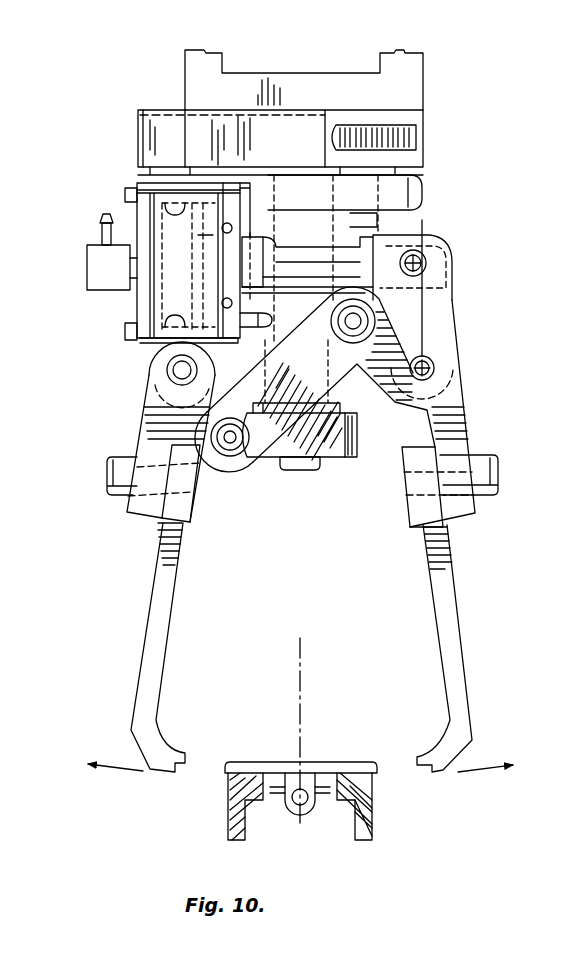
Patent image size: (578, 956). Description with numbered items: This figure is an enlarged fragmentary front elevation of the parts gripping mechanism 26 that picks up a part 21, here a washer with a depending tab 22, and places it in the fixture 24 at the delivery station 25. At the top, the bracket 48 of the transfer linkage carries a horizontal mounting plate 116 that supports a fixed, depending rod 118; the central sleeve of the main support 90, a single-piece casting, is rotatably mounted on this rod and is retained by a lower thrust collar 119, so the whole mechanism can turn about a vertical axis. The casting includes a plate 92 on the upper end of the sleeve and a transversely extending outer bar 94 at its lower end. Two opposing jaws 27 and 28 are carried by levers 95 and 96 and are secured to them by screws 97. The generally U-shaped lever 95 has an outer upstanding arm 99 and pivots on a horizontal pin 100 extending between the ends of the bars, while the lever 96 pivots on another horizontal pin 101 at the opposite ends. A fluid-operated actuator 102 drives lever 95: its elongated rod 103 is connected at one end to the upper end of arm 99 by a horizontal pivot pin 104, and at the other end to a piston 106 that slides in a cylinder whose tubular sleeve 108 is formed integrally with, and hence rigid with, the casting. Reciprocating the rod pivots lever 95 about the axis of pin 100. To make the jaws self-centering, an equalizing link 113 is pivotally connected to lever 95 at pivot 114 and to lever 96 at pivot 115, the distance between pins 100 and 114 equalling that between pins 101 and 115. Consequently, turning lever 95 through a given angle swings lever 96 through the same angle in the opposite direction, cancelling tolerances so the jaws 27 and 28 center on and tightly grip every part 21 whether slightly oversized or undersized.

The part 21 is at (332, 765).
The tab 22 is at (305, 812).
The fixture 24 is at (224, 812).
The delivery station 25 is at (290, 745).
The gripping mechanism 26 is at (115, 562).
The jaw 27 is at (460, 618).
The jaw 28 is at (136, 655).
The bracket 48 is at (268, 78).
The main support 90 is at (372, 226).
The plate 92 is at (425, 190).
The outer bar 94 is at (364, 398).
The lever 95 is at (468, 412).
The lever 96 is at (138, 442).
The screw 97 is at (107, 488).
The outer upstanding arm 99 is at (142, 422).
The horizontal pin 100 is at (434, 368).
The horizontal pin 101 is at (167, 372).
The fluid-operated actuator 102 is at (128, 215).
The rod 103 is at (310, 245).
The horizontal pivot pin 104 is at (440, 250).
The piston 106 is at (152, 290).
The tubular sleeve 108 is at (160, 182).
The equalizing link 113 is at (282, 434).
The pivot 114 is at (440, 318).
The pivot 115 is at (232, 456).
The mounting plate 116 is at (200, 115).
The rod 118 is at (318, 117).
The thrust collar 119 is at (339, 460).